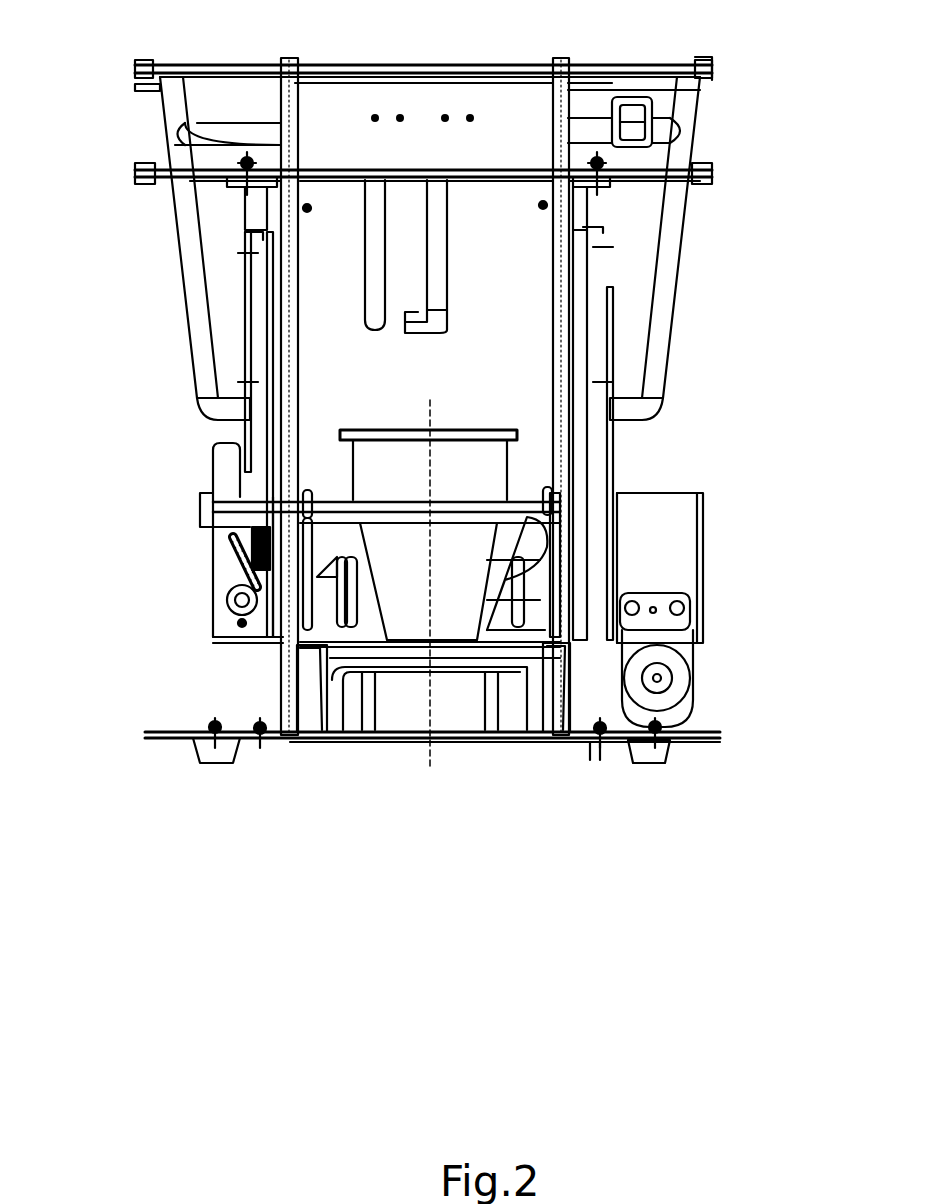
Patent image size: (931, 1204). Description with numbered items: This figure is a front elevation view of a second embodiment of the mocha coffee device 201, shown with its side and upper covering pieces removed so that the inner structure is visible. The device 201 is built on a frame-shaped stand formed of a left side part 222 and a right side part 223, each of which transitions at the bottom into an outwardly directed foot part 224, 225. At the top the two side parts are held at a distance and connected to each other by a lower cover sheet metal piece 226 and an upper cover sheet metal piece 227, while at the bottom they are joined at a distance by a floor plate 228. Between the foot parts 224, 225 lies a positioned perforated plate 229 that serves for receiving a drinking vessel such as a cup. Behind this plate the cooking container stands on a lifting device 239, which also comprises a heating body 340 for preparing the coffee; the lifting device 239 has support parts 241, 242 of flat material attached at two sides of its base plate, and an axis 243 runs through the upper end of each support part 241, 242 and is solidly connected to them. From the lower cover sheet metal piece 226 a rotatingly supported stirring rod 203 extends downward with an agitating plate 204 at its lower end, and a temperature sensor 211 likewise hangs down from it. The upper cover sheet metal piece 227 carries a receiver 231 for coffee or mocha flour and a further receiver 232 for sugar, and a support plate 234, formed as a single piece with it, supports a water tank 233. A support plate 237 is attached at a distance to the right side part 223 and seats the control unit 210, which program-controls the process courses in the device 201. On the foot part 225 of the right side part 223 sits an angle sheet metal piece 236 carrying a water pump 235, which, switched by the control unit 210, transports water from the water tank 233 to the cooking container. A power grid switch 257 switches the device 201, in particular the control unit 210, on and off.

The device 201 is at (693, 368).
The stirring rod 203 is at (442, 250).
The agitating plate 204 is at (423, 322).
The control unit 210 is at (683, 525).
The temperature sensor 211 is at (367, 320).
The left side part 222 is at (290, 655).
The right side part 223 is at (594, 745).
The foot part 224 is at (178, 752).
The foot part 225 is at (690, 740).
The lower cover sheet metal piece 226 is at (140, 175).
The upper cover sheet metal piece 227 is at (150, 66).
The floor plate 228 is at (468, 740).
The positioned perforated plate 229 is at (372, 750).
The receiver for coffee flour 231 is at (165, 102).
The receiver for sugar 232 is at (682, 98).
The water tank 233 is at (655, 238).
The support plate 234 is at (712, 73).
The water pump 235 is at (668, 645).
The angle sheet metal piece 236 is at (682, 725).
The support plate 237 is at (557, 492).
The lifting device 239 is at (180, 532).
The support part 241 is at (283, 643).
The support part 242 is at (575, 580).
The axis 243 is at (520, 505).
The power grid switch 257 is at (680, 133).
The heating body 340 is at (585, 605).